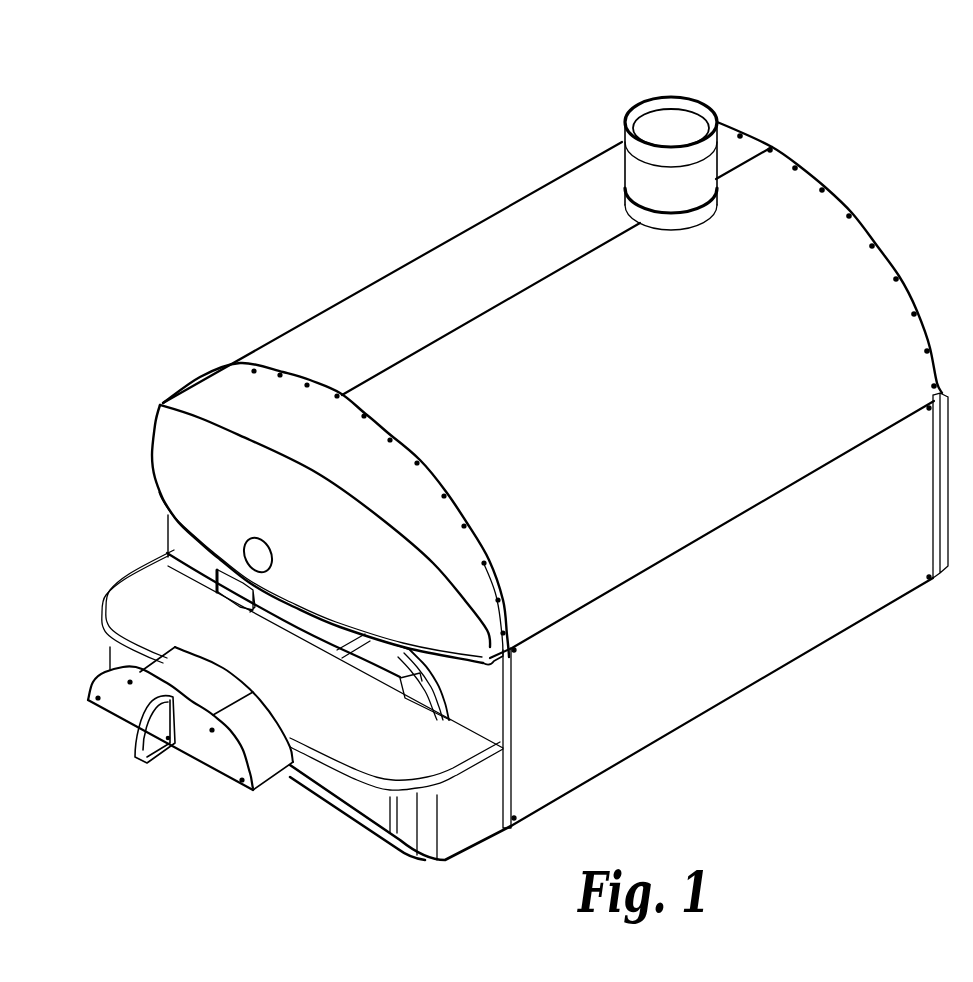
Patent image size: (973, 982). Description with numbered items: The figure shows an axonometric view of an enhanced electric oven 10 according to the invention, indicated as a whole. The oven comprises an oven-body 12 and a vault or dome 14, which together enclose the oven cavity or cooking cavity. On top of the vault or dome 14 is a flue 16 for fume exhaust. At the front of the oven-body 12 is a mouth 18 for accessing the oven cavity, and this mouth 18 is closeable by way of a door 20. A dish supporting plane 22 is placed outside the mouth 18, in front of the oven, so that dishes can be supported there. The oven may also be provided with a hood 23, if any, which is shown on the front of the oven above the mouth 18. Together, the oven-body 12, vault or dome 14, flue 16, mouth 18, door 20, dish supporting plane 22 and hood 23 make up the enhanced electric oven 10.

The enhanced electric oven 10 is at (333, 148).
The oven-body 12 is at (730, 625).
The vault or dome 14 is at (832, 270).
The flue 16 is at (682, 95).
The mouth 18 is at (370, 650).
The door 20 is at (200, 748).
The dish supporting plane 22 is at (158, 610).
The hood 23 is at (195, 448).